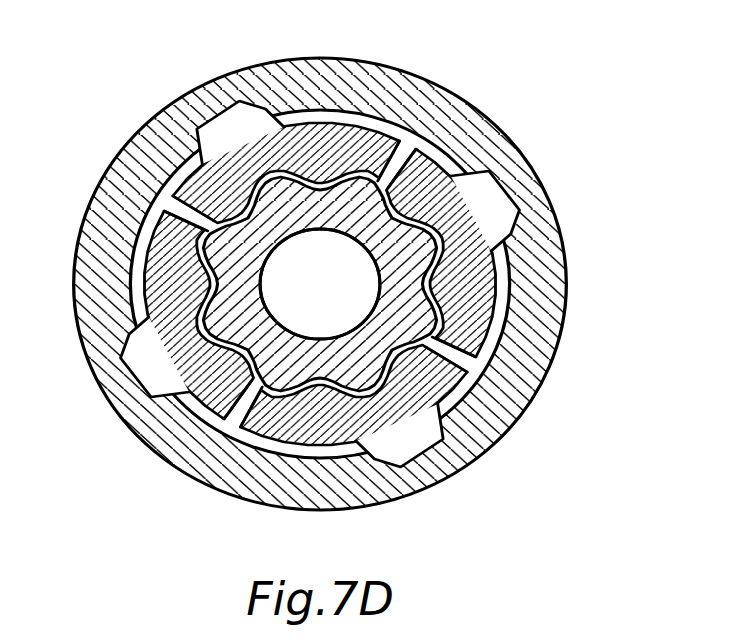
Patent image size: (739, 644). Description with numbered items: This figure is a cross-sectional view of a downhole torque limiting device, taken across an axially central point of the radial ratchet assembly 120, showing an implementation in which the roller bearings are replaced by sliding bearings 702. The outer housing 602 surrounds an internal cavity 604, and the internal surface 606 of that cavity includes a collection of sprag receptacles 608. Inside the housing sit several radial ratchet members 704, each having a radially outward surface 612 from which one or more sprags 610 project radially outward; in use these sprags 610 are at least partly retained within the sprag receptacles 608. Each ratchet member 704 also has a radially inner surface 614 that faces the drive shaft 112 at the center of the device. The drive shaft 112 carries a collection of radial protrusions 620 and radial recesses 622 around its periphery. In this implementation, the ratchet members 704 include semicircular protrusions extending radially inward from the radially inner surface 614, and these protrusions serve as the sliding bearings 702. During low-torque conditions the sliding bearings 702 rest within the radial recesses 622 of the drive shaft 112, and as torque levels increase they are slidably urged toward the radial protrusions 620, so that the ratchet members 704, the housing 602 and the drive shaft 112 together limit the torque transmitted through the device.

The radial ratchet assembly 120 is at (451, 80).
The outer housing 602 is at (468, 96).
The internal cavity 604 is at (512, 370).
The internal surface 606 is at (478, 363).
The sprag receptacles 608 is at (222, 100).
The sprags 610 is at (243, 95).
The radially outward surface 612 is at (342, 120).
The radially inner surface 614 is at (470, 118).
The radial protrusions 620 is at (350, 390).
The radial recesses 622 is at (268, 232).
The drive shaft 112 is at (380, 272).
The sliding bearings 702 is at (360, 128).
The radial ratchet members 704 is at (319, 284).